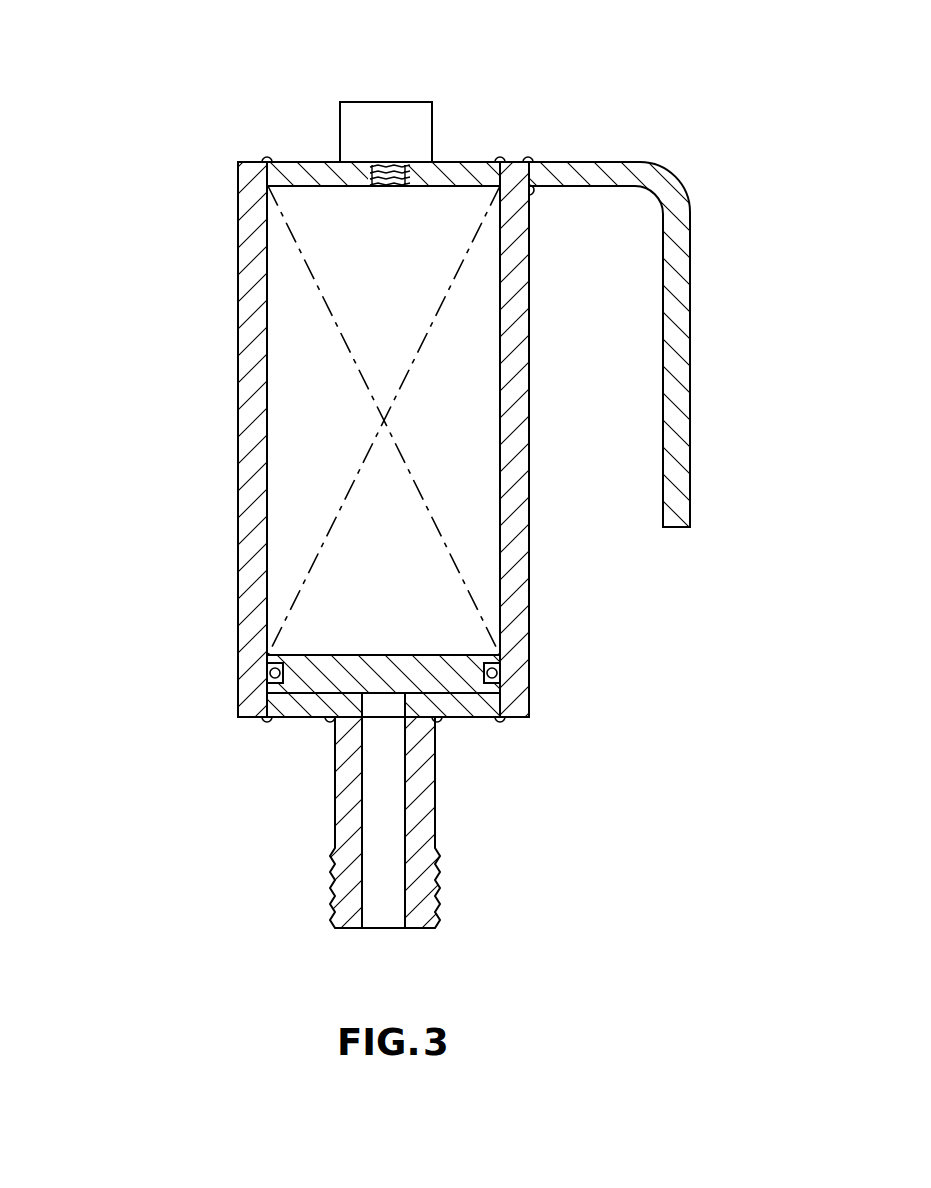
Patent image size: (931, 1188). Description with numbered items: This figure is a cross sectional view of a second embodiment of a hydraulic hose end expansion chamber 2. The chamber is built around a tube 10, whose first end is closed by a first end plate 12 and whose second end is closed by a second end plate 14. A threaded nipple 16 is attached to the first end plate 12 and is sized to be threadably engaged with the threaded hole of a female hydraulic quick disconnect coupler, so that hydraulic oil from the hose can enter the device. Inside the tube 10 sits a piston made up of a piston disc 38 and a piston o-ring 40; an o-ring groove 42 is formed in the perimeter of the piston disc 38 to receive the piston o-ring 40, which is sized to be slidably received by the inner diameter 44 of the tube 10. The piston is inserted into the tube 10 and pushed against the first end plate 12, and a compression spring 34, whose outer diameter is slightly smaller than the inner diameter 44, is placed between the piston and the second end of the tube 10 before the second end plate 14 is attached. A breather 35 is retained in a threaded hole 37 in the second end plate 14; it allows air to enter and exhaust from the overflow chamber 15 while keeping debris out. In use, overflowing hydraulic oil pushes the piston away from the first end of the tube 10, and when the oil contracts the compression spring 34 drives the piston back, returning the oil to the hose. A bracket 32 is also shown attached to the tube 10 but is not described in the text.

The hydraulic hose end expansion chamber 2 is at (644, 736).
The tube 10 is at (525, 537).
The first end plate 12 is at (300, 712).
The second end plate 14 is at (470, 162).
The overflow chamber 15 is at (295, 373).
The threaded nipple 16 is at (435, 787).
The mounting bracket 32 is at (676, 178).
The compression spring 34 is at (347, 497).
The breather 35 is at (340, 135).
The threaded hole 37 is at (408, 172).
The piston disc 38 is at (442, 683).
The piston o-ring 40 is at (268, 673).
The o-ring groove 42 is at (283, 670).
The inner diameter 44 is at (503, 438).